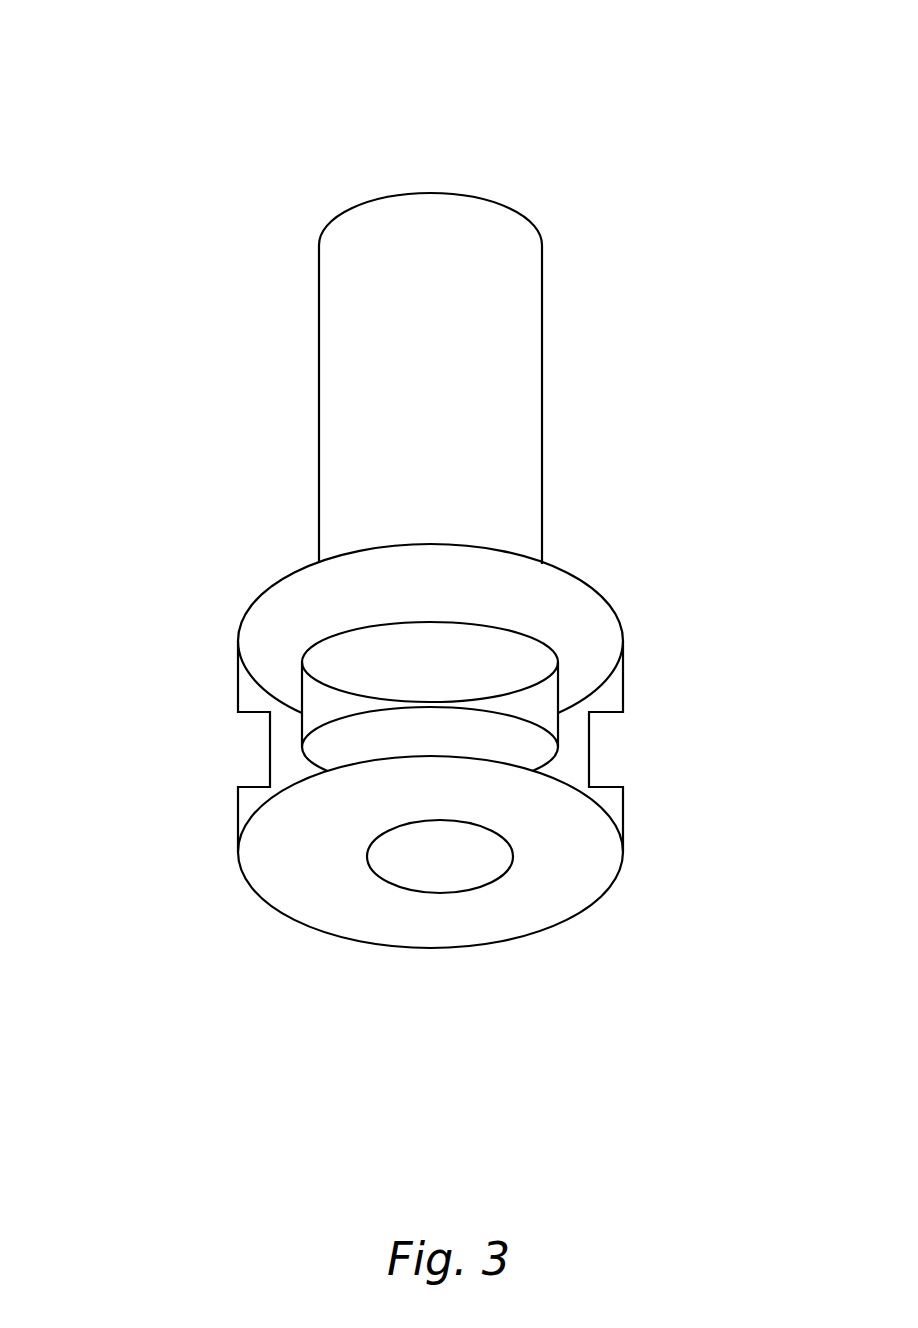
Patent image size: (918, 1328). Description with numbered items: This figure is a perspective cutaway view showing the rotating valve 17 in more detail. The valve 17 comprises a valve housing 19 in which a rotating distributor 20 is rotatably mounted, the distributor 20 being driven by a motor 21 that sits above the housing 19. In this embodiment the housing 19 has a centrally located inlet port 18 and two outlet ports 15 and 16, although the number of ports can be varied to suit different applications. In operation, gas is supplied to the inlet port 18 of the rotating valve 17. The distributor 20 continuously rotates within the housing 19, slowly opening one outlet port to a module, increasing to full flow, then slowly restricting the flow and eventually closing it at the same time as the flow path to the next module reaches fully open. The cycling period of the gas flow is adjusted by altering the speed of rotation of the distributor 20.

The rotating valve 17 is at (568, 158).
The motor 21 is at (518, 390).
The rotating distributor 20 is at (480, 665).
The outlet port 15 is at (258, 745).
The outlet port 16 is at (605, 745).
The valve housing 19 is at (563, 875).
The inlet port 18 is at (427, 862).